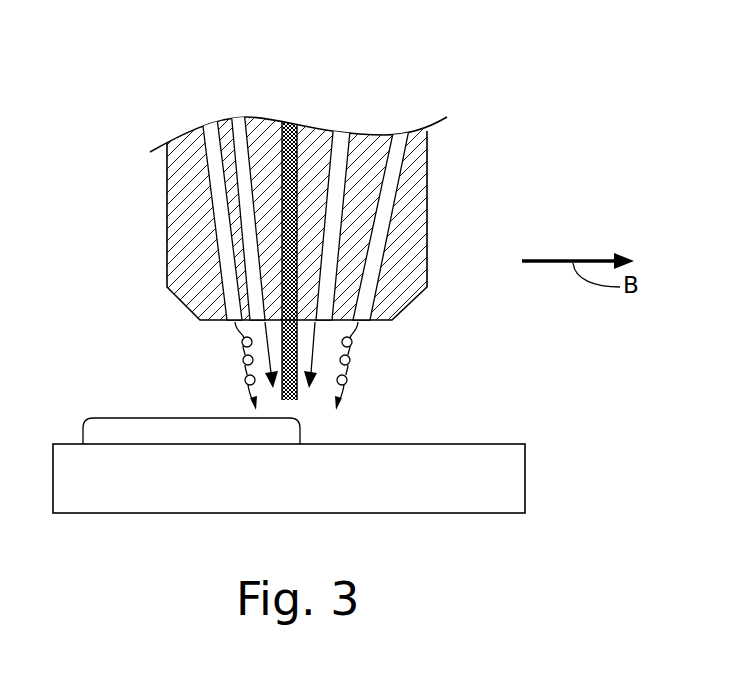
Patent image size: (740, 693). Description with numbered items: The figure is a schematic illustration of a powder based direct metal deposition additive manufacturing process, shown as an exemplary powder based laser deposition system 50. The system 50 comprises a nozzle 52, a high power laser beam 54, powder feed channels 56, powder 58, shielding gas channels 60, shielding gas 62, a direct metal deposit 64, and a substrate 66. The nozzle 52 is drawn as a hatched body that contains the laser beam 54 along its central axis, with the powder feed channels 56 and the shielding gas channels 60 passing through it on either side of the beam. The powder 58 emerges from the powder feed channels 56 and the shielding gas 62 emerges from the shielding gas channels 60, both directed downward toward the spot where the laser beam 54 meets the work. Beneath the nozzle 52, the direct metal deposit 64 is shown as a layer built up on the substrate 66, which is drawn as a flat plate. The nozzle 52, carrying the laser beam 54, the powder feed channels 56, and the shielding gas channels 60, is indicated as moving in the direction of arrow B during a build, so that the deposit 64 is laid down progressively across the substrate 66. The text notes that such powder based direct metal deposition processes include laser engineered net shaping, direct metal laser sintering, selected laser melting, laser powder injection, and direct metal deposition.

The powder based laser deposition system 50 is at (556, 96).
The nozzle 52 is at (410, 230).
The high power laser beam 54 is at (297, 143).
The powder feed channels 56 is at (240, 140).
The powder 58 is at (272, 363).
The shielding gas channels 60 is at (210, 137).
The shielding gas 62 is at (241, 342).
The direct metal deposit 64 is at (108, 428).
The substrate 66 is at (490, 475).